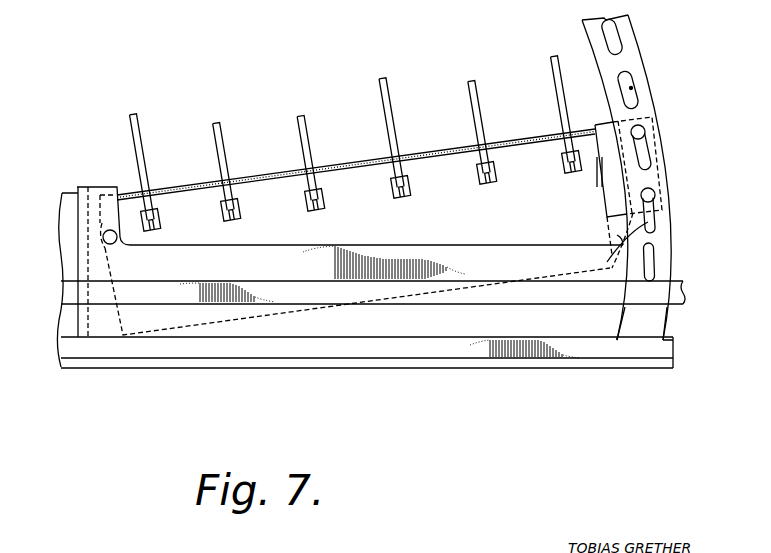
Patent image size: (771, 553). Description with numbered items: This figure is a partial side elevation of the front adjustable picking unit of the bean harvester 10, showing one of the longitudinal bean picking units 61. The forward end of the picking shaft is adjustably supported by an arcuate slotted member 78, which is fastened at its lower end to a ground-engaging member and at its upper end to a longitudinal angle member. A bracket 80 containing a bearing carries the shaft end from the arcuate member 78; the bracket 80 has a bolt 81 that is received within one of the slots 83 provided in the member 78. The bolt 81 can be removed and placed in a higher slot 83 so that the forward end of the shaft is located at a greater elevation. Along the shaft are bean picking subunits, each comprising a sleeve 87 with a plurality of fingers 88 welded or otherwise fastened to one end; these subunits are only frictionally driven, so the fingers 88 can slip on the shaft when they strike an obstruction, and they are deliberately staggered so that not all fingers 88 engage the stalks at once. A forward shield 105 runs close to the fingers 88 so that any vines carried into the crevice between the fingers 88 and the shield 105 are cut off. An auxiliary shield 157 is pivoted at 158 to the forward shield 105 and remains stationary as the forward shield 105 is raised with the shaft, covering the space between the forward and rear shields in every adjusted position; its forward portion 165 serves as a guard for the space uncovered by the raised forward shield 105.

The apparatus 10 is at (678, 163).
The longitudinal bean picking unit 61 is at (504, 138).
The arcuate slotted member 78 is at (632, 58).
The bracket 80 is at (603, 128).
The bolt 81 is at (640, 132).
The slot 83 is at (632, 88).
The sleeve 87 is at (233, 217).
The fingers 88 is at (384, 78).
The shield 105 is at (68, 194).
The auxiliary shield 157 is at (97, 192).
The pivot 158 is at (115, 243).
The forward portion of auxiliary shield 165 is at (617, 235).